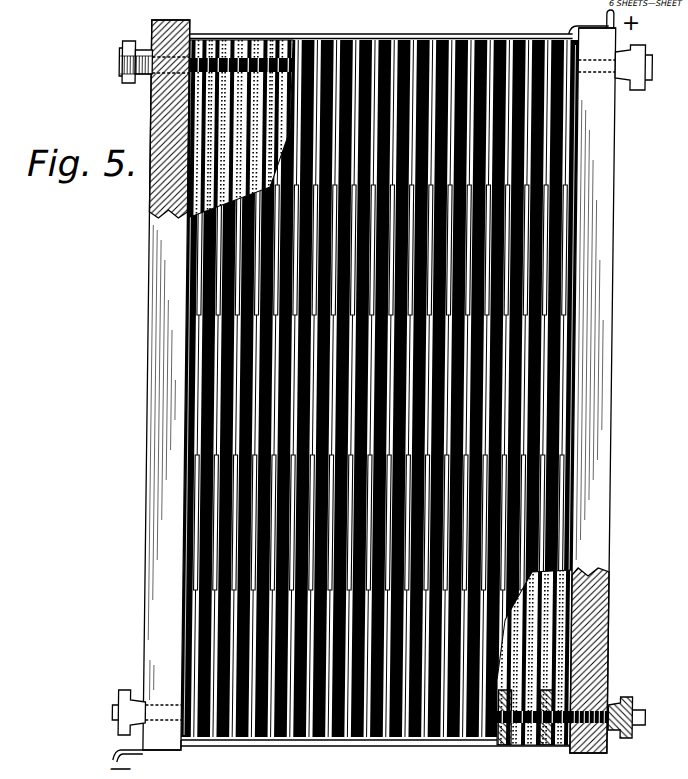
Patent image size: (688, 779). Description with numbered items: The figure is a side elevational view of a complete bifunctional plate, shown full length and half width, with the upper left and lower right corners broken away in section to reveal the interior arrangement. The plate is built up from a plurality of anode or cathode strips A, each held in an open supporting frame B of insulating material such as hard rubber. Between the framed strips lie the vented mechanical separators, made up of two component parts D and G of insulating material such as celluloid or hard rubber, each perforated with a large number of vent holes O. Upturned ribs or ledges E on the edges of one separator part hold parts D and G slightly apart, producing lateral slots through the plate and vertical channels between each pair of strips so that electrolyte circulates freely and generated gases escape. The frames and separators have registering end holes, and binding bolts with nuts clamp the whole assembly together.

The anode or cathode strips A is at (320, 38).
The open supporting frame B is at (189, 42).
The mechanical separator part D is at (221, 42).
The upturned ribs or ledges E is at (572, 135).
The mechanical separator part G is at (193, 485).
The vent holes or perforations O is at (196, 186).